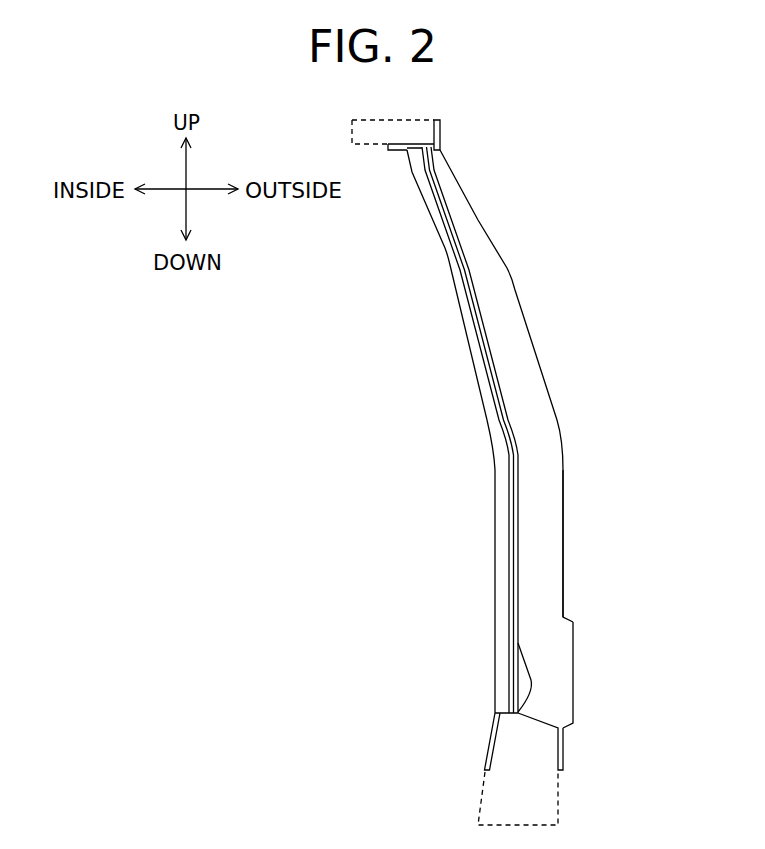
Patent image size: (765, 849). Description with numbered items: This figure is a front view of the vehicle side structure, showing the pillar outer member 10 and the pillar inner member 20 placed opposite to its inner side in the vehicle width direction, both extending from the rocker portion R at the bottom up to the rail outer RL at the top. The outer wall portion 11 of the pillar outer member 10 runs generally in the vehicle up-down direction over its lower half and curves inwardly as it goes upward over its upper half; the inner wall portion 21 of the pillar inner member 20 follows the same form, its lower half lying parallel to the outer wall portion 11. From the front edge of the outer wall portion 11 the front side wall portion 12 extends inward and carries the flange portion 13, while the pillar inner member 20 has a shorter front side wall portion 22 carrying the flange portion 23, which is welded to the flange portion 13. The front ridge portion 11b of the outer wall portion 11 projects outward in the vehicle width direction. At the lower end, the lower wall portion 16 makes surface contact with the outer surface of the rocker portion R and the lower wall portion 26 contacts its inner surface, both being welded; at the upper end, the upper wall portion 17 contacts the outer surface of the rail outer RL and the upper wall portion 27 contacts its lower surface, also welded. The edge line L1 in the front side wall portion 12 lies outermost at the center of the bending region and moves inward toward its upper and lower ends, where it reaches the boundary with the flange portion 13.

The pillar outer member 10 is at (538, 444).
The outer wall portion 11 is at (542, 370).
The front ridge portion 11b is at (574, 690).
The front side wall portion 12 is at (547, 535).
The flange portion 13 is at (519, 478).
The lower wall portion 16 is at (564, 752).
The upper wall portion 17 is at (442, 130).
The pillar inner member 20 is at (490, 457).
The inner wall portion 21 is at (480, 393).
The front side wall portion 22 is at (495, 492).
The flange portion 23 is at (509, 550).
The lower wall portion 26 is at (487, 742).
The upper wall portion 27 is at (398, 152).
The edge line L1 is at (530, 676).
The rocker portion R is at (563, 797).
The rail outer RL is at (388, 120).